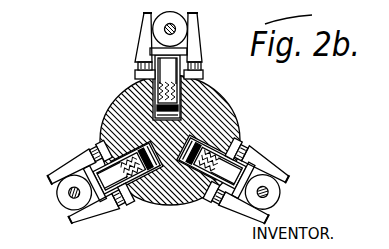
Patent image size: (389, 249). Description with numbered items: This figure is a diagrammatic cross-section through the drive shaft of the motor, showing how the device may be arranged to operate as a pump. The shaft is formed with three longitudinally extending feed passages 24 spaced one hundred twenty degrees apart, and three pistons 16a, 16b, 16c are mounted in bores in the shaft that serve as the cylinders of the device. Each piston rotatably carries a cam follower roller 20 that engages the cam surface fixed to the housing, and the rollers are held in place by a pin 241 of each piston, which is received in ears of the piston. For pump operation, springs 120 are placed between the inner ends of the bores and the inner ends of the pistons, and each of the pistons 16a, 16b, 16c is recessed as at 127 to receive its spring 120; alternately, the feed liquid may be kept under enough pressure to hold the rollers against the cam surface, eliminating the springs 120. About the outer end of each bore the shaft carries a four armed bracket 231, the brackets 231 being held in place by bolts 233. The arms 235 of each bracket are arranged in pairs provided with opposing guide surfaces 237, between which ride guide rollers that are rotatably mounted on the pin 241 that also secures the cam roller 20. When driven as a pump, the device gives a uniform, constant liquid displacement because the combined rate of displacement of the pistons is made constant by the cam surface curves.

The cam follower roller 20 is at (152, 31).
The pin 241 is at (182, 26).
The guide surfaces 237 is at (151, 15).
The arms 235 is at (142, 41).
The four armed bracket 231 is at (141, 51).
The bolts 233 is at (137, 65).
The feed passages 24 is at (113, 98).
The springs 120 is at (124, 132).
The recess 127 is at (180, 92).
The piston 16a is at (167, 62).
The piston 16b is at (112, 176).
The piston 16c is at (222, 172).